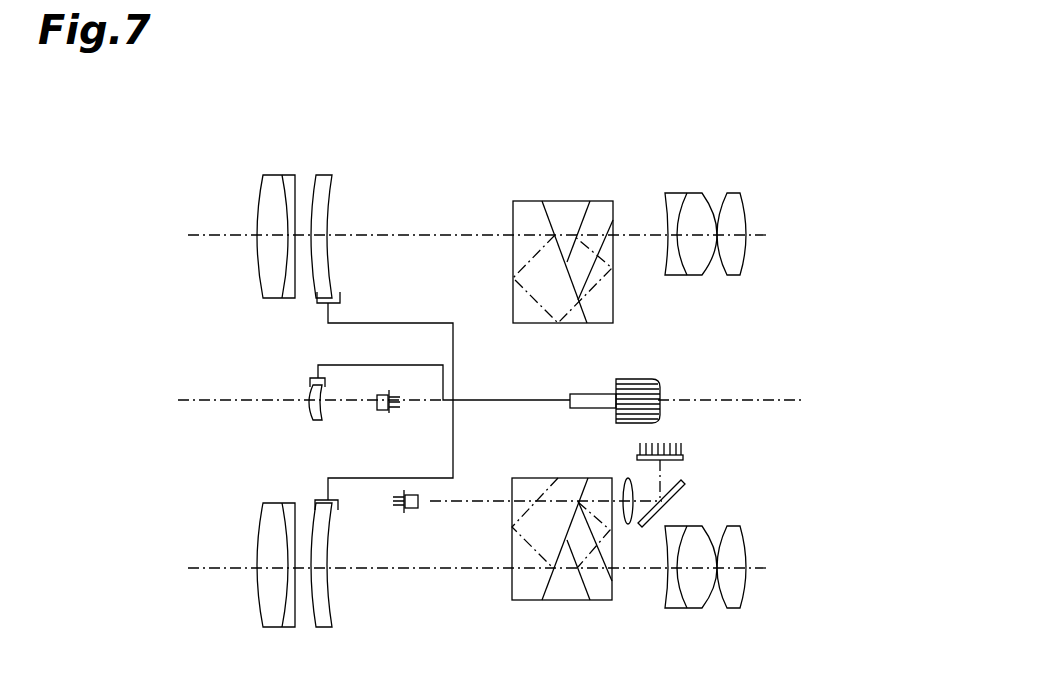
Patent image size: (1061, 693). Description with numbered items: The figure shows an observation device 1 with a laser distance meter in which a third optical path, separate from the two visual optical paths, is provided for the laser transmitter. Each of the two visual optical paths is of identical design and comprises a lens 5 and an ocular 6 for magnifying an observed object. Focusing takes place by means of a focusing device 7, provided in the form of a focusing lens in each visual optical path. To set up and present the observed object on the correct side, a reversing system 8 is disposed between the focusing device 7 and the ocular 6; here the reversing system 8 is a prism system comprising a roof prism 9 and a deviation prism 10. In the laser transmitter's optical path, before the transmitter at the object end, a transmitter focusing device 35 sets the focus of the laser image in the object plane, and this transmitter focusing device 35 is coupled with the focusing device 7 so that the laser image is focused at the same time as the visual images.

The observation device 1 is at (828, 0).
The lens 5 is at (264, 166).
The ocular 6 is at (710, 178).
The focusing device 7 is at (344, 166).
The reversing system 8 is at (647, 216).
The roof prism 9 is at (618, 335).
The deviation prism 10 is at (545, 336).
The transmitter focusing device 35 is at (296, 428).